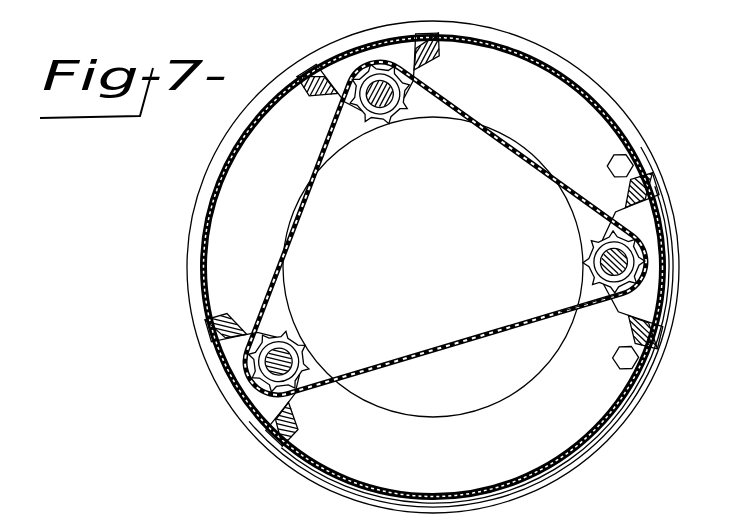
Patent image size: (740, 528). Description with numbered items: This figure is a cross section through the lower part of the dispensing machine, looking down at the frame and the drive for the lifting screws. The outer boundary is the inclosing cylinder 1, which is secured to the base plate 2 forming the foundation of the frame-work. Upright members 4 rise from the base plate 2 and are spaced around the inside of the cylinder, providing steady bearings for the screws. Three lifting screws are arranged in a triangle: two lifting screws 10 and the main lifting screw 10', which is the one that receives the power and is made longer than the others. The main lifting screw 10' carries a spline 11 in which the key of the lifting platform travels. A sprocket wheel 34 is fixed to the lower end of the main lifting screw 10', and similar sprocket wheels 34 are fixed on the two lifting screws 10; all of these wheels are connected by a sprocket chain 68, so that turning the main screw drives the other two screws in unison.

The inclosing cylinder 1 is at (570, 85).
The base plate 2 is at (433, 267).
The upright members 4 is at (432, 70).
The lifting screws 10 is at (300, 244).
The main lifting screw 10' is at (570, 250).
The spline 11 is at (593, 288).
The sprocket wheels 34 is at (387, 118).
The sprocket chain 68 is at (292, 247).